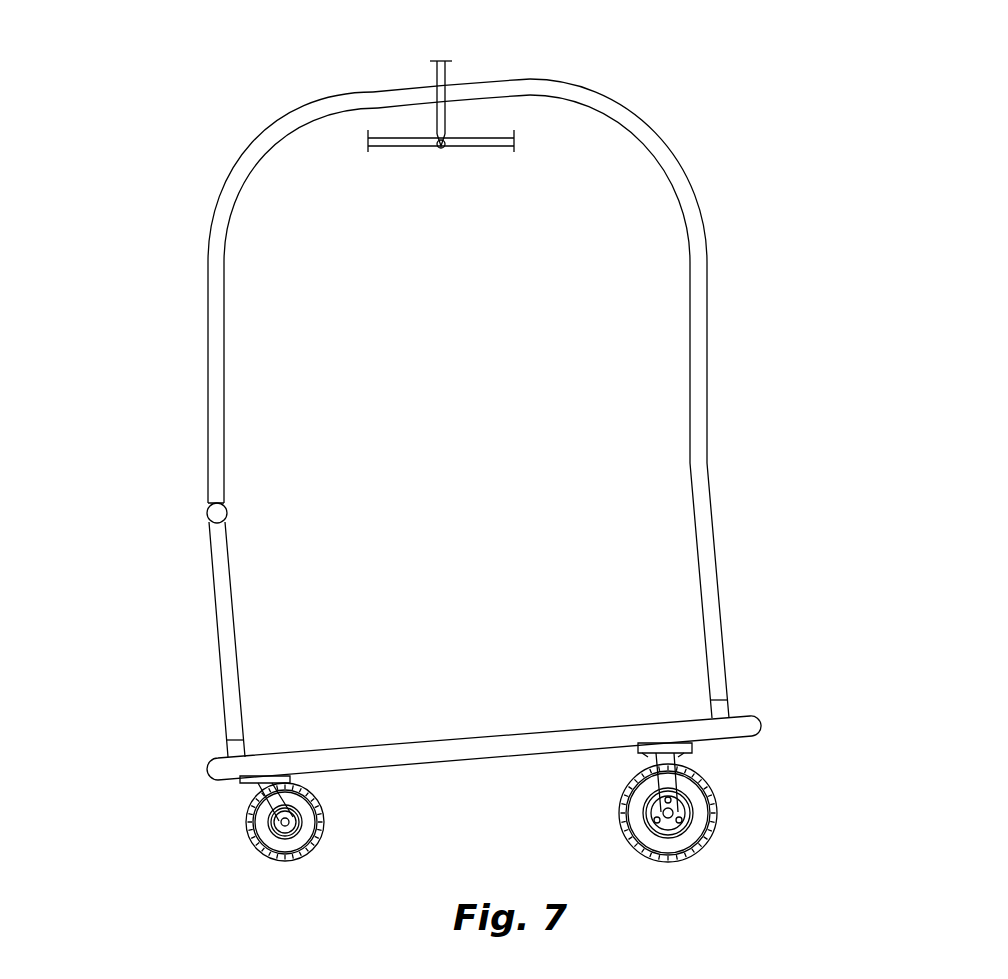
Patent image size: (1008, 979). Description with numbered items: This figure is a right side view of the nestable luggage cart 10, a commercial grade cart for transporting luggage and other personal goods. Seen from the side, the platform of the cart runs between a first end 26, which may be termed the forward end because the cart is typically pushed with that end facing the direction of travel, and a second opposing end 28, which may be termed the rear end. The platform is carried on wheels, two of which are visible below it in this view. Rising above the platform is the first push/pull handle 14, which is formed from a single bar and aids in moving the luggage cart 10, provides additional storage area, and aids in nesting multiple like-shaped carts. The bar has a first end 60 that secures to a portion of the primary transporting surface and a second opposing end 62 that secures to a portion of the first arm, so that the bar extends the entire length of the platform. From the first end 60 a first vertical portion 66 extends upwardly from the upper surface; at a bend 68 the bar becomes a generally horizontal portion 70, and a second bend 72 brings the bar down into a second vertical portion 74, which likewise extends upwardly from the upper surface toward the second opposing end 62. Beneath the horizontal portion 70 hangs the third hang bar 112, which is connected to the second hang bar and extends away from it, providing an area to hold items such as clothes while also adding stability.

The luggage cart 10 is at (152, 217).
The first push/pull handle 14 is at (181, 478).
The first end 26 is at (210, 775).
The second opposing end 28 is at (760, 722).
The first end 60 is at (222, 752).
The second opposing end 62 is at (730, 713).
The first vertical portion 66 is at (222, 577).
The bend 68 is at (247, 153).
The horizontal portion 70 is at (483, 82).
The second bend 72 is at (673, 170).
The second vertical portion 74 is at (707, 560).
The third hang bar 112 is at (481, 144).